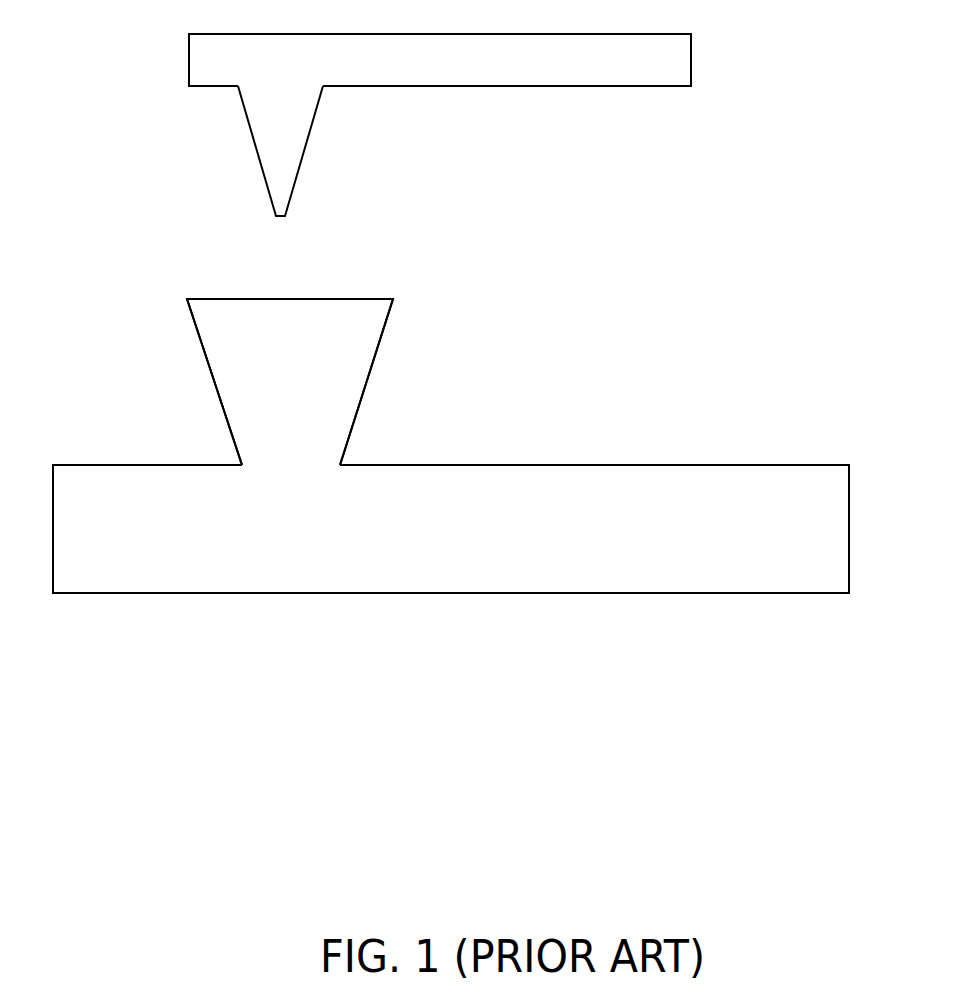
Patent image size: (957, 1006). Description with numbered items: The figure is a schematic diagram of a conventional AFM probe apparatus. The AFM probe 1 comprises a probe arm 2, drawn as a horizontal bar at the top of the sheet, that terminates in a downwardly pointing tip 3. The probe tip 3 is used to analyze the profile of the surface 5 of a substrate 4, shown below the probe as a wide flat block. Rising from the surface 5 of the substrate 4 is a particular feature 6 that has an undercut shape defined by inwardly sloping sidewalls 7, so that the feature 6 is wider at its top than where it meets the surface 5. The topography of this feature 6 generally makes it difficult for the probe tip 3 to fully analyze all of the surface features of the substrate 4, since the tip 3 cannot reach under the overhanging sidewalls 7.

The AFM probe 1 is at (716, 59).
The probe arm 2 is at (293, 137).
The tip 3 is at (262, 230).
The substrate 4 is at (837, 556).
The surface 5 is at (800, 465).
The feature 6 is at (372, 320).
The inwardly sloping sidewalls 7 is at (202, 357).